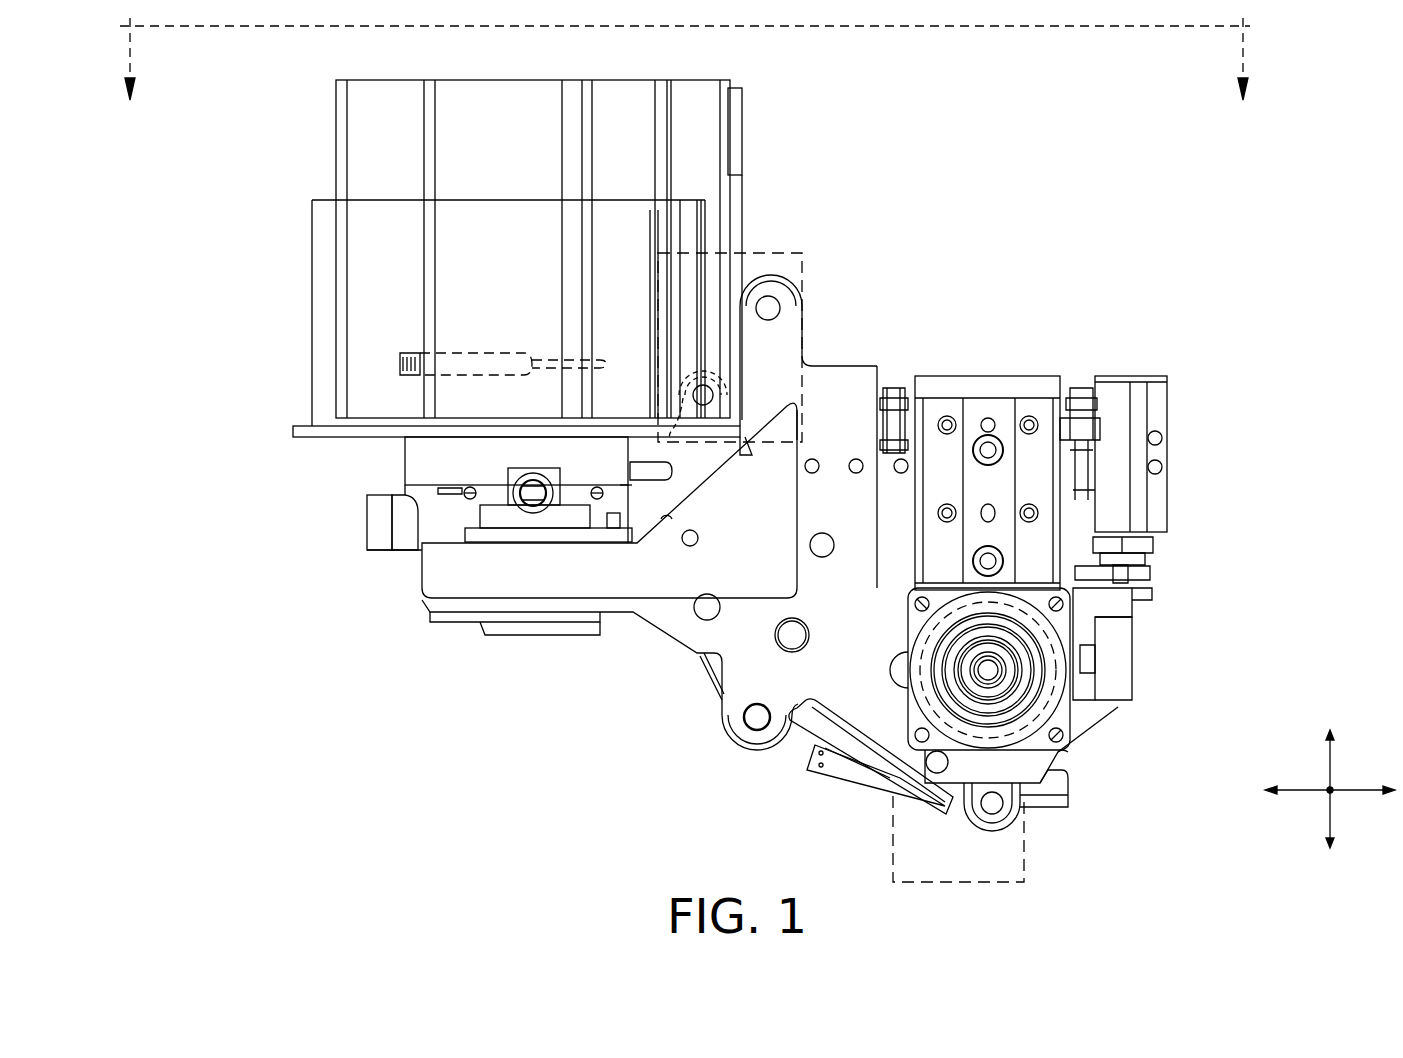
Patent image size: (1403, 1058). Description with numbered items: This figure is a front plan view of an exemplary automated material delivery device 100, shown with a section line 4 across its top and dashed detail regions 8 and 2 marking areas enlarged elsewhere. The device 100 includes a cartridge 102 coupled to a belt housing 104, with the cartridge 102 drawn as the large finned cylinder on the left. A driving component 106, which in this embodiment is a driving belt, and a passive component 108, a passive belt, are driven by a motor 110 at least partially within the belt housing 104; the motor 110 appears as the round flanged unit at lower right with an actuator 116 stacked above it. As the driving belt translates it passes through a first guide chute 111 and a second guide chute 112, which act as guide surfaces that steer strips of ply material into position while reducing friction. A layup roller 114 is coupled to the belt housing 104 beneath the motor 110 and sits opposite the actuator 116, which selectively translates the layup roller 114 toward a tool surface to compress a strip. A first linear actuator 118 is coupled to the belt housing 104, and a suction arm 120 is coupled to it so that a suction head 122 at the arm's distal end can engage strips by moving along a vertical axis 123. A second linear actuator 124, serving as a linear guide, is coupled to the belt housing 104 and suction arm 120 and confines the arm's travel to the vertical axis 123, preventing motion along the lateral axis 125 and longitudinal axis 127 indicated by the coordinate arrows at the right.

The automated material delivery device 100 is at (303, 85).
The section line 4- 4 is at (683, 96).
The cartridge 102 is at (360, 234).
The belt housing 104 is at (850, 378).
The driving component 106 is at (752, 284).
The passive component 108 is at (706, 665).
The motor 110 is at (1035, 720).
The first guide chute 111 is at (690, 457).
The second guide chute 112 is at (835, 780).
The layup roller 114 is at (1010, 830).
The actuator 116 is at (990, 386).
The first linear actuator 118 is at (1158, 380).
The suction arm 120 is at (1110, 630).
The suction head 122 is at (1068, 817).
The second linear actuator 124 is at (1083, 573).
The detail region of FIG. 8 is at (805, 258).
The detail region of FIG. 2 is at (1027, 866).
The vertical axis 123 is at (1330, 750).
The lateral axis 125 is at (1294, 791).
The longitudinal axis 127 is at (1332, 789).